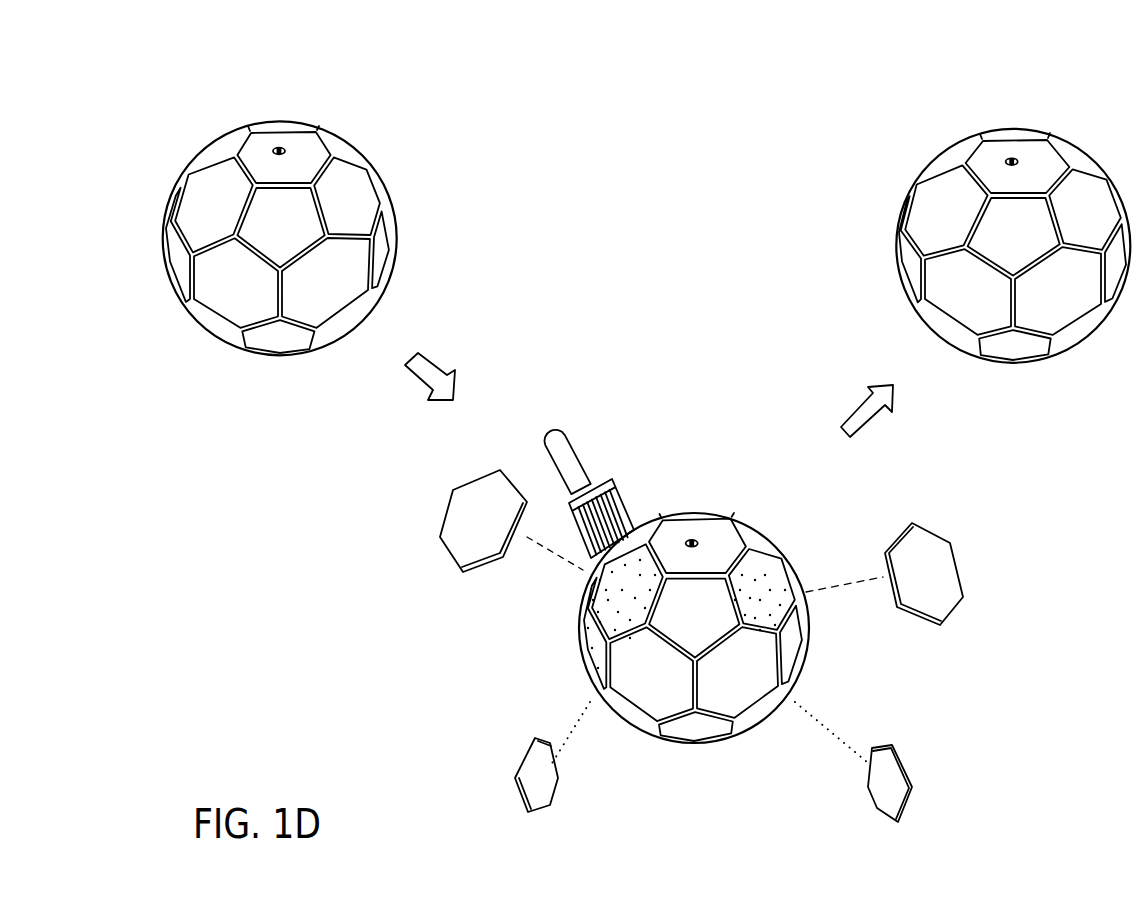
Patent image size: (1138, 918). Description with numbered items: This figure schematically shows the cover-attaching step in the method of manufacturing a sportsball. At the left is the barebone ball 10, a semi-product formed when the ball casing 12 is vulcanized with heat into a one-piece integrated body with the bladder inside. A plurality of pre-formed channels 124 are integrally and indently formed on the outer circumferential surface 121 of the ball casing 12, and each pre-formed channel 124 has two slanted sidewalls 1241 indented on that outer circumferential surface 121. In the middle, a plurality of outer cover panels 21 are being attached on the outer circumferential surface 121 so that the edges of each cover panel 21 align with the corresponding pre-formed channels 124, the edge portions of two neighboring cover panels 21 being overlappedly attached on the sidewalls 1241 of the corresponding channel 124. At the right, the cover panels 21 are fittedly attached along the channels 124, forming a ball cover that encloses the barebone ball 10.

The barebone ball 10 is at (318, 194).
The ball casing 12 is at (361, 214).
The outer circumferential surface 121 is at (320, 287).
The pre-formed channel 124 is at (343, 153).
The slanted sidewall 1241 is at (244, 150).
The outer cover panel 21 is at (715, 535).